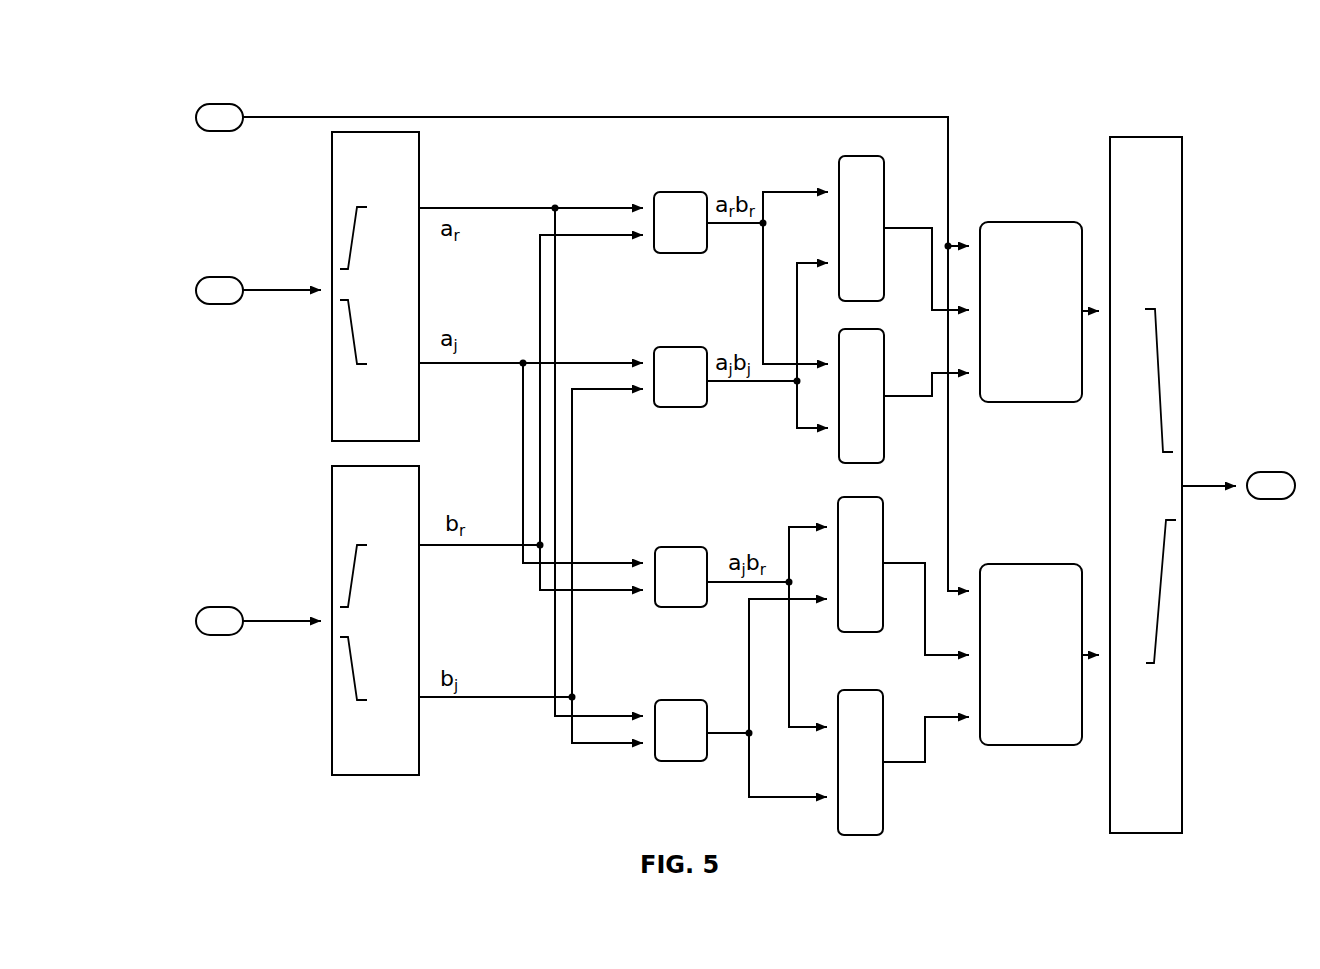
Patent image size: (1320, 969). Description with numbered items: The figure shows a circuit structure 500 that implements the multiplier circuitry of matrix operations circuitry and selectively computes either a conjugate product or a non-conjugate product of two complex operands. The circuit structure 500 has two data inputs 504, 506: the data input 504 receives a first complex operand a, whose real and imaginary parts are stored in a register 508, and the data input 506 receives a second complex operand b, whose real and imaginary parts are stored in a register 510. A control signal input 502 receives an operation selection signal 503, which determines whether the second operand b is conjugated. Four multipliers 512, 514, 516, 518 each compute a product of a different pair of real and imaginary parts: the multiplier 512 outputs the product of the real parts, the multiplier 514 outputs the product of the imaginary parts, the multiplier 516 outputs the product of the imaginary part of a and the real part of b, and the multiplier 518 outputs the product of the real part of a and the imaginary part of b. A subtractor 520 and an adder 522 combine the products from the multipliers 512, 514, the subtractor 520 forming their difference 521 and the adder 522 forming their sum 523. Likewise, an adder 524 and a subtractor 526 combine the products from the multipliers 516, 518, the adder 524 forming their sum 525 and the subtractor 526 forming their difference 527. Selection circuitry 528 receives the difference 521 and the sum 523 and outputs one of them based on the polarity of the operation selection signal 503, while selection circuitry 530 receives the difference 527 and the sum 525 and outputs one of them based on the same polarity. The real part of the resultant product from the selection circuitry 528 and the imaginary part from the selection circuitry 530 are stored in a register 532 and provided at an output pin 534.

The circuit structure 500 is at (199, 38).
The control signal input 502 is at (220, 104).
The operation selection signal 503 is at (283, 118).
The data input 504 is at (196, 290).
The data input 506 is at (196, 621).
The register 508 is at (420, 165).
The register 510 is at (420, 487).
The multiplier 512 is at (678, 192).
The multiplier 514 is at (678, 347).
The multiplier 516 is at (678, 547).
The multiplier 518 is at (678, 700).
The subtractor 520 is at (860, 156).
The difference of products 521 is at (903, 226).
The adder 522 is at (885, 452).
The sum of products 523 is at (903, 394).
The adder 524 is at (886, 522).
The sum of products 525 is at (923, 637).
The subtractor 526 is at (885, 708).
The difference of products 527 is at (913, 765).
The selection circuitry 528 is at (1028, 220).
The selection circuitry 530 is at (1028, 563).
The register 532 is at (1145, 137).
The output pin 534 is at (1270, 472).